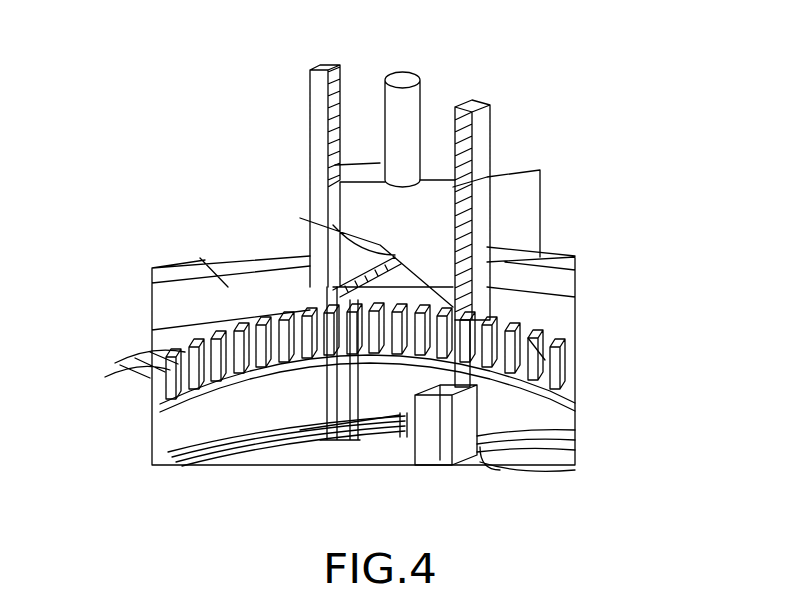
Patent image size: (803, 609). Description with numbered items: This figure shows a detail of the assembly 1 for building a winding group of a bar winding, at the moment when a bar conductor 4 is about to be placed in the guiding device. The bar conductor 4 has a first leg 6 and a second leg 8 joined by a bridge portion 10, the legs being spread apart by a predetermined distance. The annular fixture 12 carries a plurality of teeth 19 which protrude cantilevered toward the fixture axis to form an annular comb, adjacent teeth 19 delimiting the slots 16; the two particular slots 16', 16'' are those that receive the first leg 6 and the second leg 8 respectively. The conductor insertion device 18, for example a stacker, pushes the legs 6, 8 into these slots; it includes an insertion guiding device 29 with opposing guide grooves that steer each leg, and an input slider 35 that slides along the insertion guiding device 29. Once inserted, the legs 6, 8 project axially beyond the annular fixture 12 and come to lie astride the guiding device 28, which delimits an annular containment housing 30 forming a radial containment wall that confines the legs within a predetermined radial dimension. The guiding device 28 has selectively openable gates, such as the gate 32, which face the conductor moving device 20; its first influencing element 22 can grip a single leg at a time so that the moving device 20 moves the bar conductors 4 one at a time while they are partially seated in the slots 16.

The assembly 1 is at (693, 343).
The bar conductor 4 is at (275, 302).
The first leg 6 is at (330, 378).
The second leg 8 is at (545, 332).
The bridge portion 10 is at (444, 298).
The annular fixture 12 is at (590, 340).
The slot 16 is at (316, 463).
The slot 16' is at (235, 396).
The slot 16'' is at (528, 282).
The conductor insertion device 18 is at (428, 207).
The teeth 19 is at (133, 390).
The conductor moving device 20 is at (480, 415).
The first influencing element 22 is at (447, 443).
The guiding device 28 is at (480, 447).
The insertion guiding device 29 is at (320, 155).
The annular containment housing 30 is at (397, 420).
The gate 32 is at (482, 462).
The input slider 35 is at (346, 168).